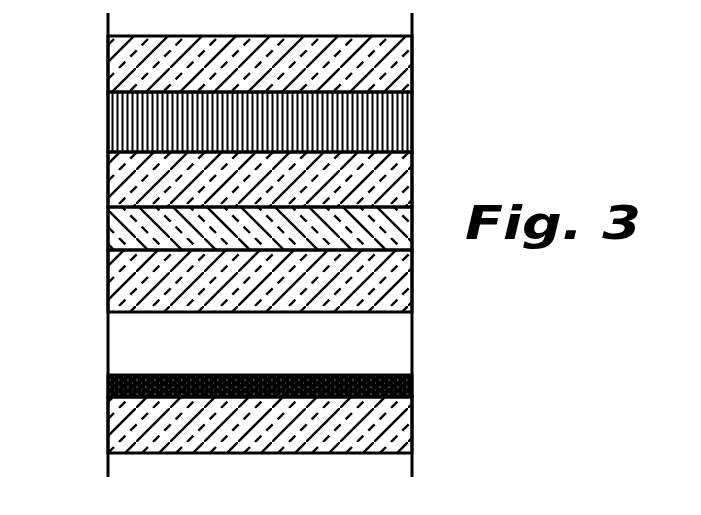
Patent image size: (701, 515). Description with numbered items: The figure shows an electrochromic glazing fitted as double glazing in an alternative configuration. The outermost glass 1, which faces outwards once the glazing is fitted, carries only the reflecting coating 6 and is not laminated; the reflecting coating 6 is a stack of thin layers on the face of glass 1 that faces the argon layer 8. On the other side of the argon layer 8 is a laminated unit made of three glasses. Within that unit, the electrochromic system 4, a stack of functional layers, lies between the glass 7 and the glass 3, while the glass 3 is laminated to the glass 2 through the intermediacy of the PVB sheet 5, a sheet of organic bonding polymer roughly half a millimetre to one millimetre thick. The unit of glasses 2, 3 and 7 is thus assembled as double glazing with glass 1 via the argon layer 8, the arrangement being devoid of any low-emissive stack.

The clear glass 1 is at (132, 426).
The clear glass 2 is at (132, 279).
The clear glass 3 is at (130, 177).
The electrochromic system 4 is at (132, 120).
The sheet of organic bonding polymer 5 is at (125, 234).
The reflecting coating 6 is at (122, 386).
The glass 7 is at (135, 54).
The argon layer 8 is at (132, 337).